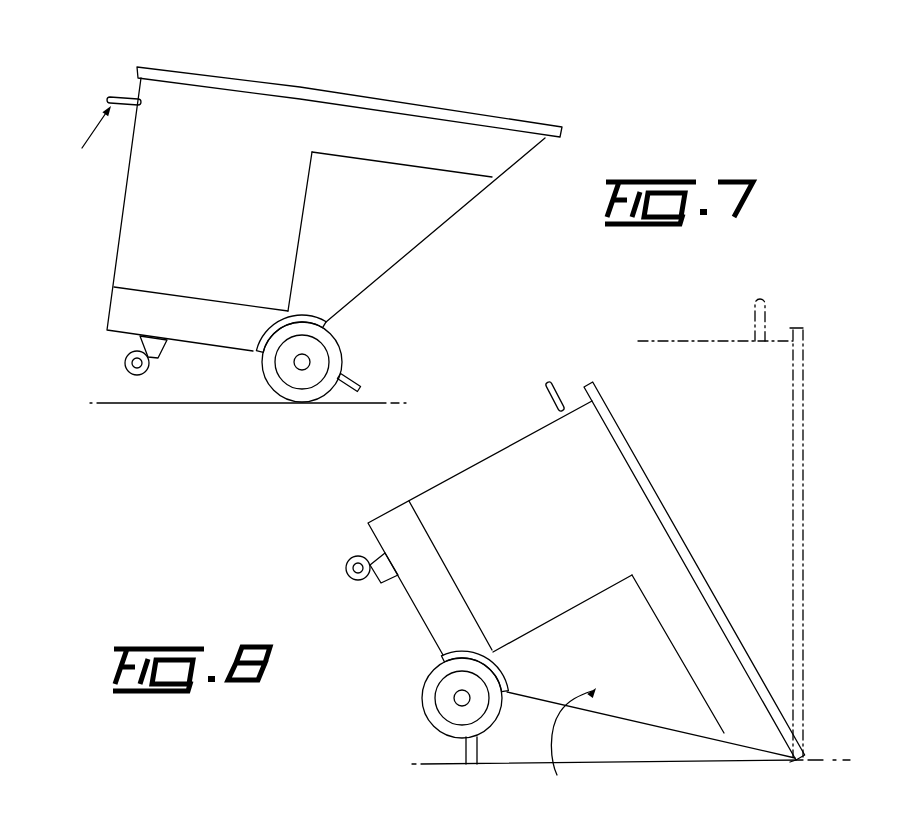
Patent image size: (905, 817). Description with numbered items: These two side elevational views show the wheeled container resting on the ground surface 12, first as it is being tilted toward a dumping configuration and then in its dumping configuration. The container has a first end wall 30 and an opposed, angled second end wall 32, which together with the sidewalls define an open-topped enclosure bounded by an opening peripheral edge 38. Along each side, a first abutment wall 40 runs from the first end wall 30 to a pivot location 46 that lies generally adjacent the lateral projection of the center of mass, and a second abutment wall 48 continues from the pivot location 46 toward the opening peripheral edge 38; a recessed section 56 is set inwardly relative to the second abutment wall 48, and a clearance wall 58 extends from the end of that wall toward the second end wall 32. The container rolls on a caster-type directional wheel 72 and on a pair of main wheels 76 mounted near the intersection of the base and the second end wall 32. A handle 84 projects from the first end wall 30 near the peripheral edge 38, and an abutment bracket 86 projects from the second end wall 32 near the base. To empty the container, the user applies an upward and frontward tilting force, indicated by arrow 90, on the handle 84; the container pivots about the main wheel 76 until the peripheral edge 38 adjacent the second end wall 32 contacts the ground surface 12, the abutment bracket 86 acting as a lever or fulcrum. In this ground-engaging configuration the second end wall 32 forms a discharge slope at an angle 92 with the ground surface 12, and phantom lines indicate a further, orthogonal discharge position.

In FIG. 7, the ground surface 12 is at (202, 402).
In FIG. 8, the ground surface 12 is at (650, 764).
In FIG. 7, the first end wall 30 is at (123, 212).
In FIG. 8, the first end wall 30 is at (483, 459).
In FIG. 7, the second end wall 32 is at (523, 157).
In FIG. 8, the second end wall 32 is at (601, 716).
In FIG. 7, the opening peripheral edge 38 is at (438, 108).
In FIG. 8, the opening peripheral edge 38 is at (645, 466).
In FIG. 7, the first abutment wall 40 is at (160, 294).
In FIG. 8, the first abutment wall 40 is at (449, 581).
In FIG. 7, the pivot location 46 is at (258, 356).
In FIG. 8, the pivot location 46 is at (442, 656).
In FIG. 7, the second abutment wall 48 is at (296, 262).
In FIG. 8, the second abutment wall 48 is at (581, 606).
In FIG. 8, the recessed section 56 is at (570, 747).
In FIG. 7, the clearance wall 58 is at (434, 170).
In FIG. 8, the clearance wall 58 is at (649, 611).
In FIG. 7, the directional wheel 72 is at (150, 364).
In FIG. 8, the directional wheel 72 is at (346, 571).
In FIG. 7, the main wheel 76 is at (331, 345).
In FIG. 8, the main wheel 76 is at (438, 717).
In FIG. 7, the handle 84 is at (110, 96).
In FIG. 8, the handle 84 is at (553, 385).
In FIG. 7, the abutment bracket 86 is at (362, 383).
In FIG. 8, the abutment bracket 86 is at (480, 748).
In FIG. 7, the tilting force arrow 90 is at (82, 148).
In FIG. 8, the angle 92 is at (760, 745).